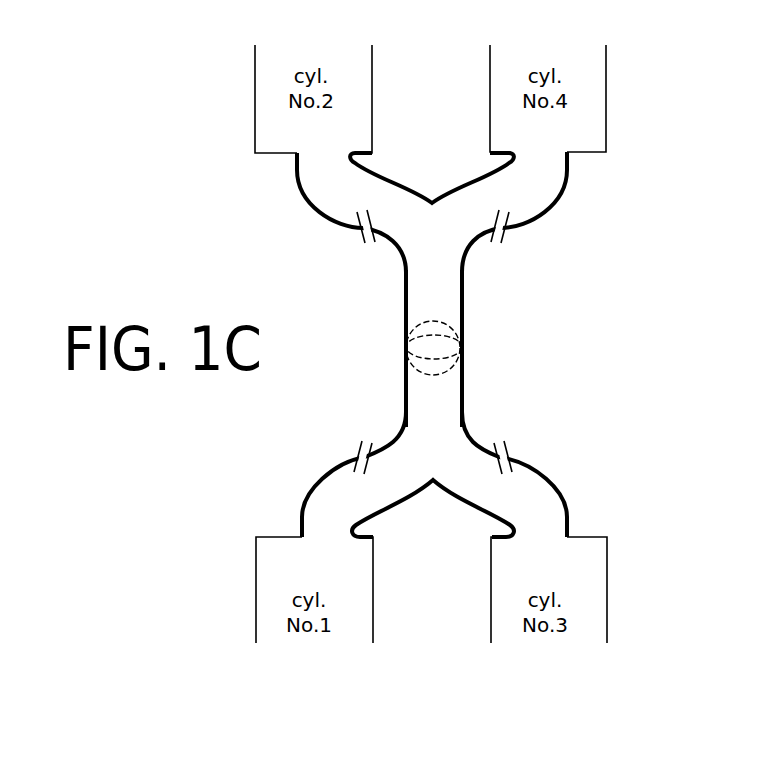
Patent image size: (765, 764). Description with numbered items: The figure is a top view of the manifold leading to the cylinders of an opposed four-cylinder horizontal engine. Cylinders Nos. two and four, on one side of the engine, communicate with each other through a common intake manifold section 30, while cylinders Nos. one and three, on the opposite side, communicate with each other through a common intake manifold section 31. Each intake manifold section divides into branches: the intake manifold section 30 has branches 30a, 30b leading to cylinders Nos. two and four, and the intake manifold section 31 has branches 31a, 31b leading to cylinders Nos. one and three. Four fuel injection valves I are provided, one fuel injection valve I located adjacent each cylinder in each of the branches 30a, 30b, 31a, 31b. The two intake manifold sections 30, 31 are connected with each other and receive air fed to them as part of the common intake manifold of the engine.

The intake manifold section 30 is at (458, 200).
The branch 30a is at (315, 185).
The branch 30b is at (547, 192).
The intake manifold section 31 is at (402, 492).
The branch 31a is at (325, 510).
The branch 31b is at (548, 505).
The fuel injection valve I is at (362, 247).